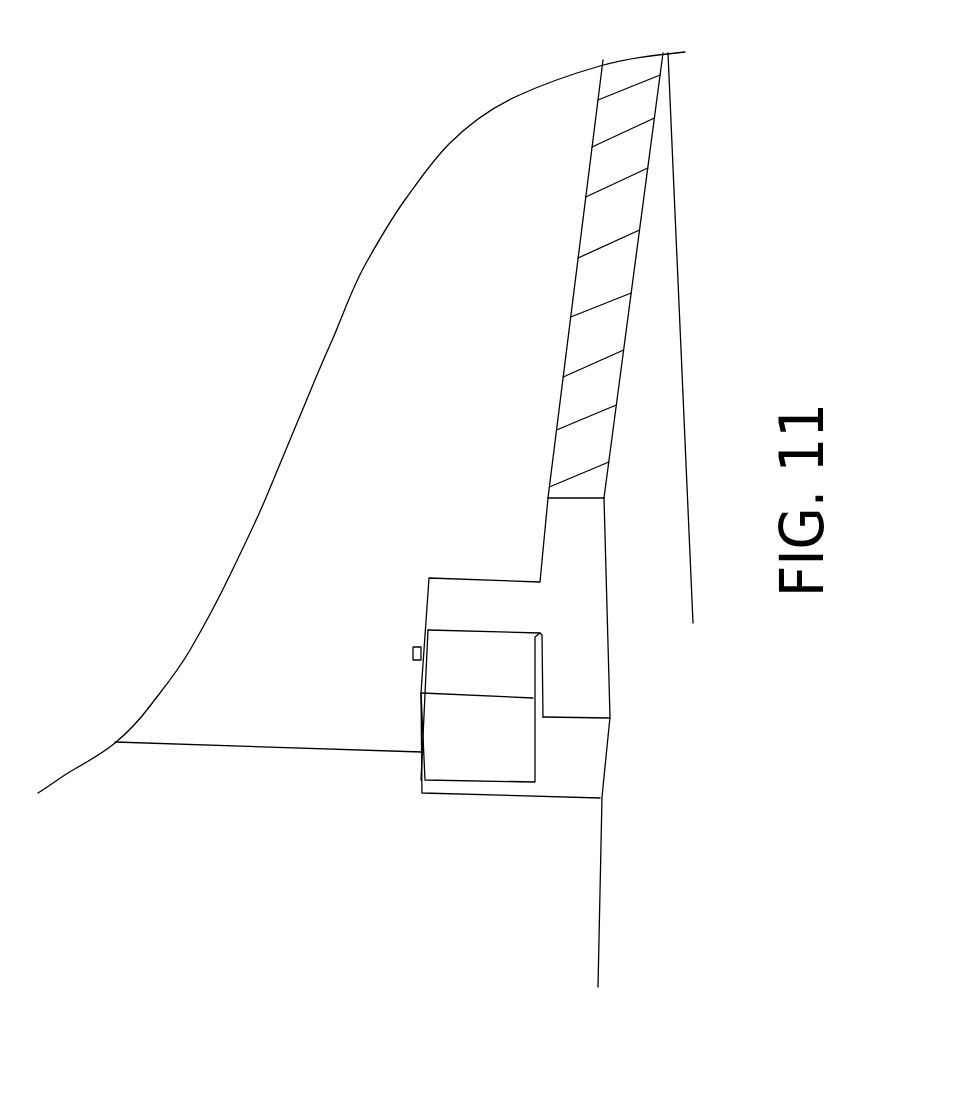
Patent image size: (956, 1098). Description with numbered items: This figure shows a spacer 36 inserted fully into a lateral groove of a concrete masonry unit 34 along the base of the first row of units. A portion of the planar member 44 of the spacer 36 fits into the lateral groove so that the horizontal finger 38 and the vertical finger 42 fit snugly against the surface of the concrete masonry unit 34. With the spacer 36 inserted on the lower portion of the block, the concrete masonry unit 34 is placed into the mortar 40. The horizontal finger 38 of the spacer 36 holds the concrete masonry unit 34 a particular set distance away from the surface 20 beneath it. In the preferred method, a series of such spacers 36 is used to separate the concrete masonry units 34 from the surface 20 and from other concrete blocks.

The surface 20 is at (404, 544).
The concrete masonry unit 34 is at (361, 422).
The spacer 36 is at (488, 732).
The horizontal finger 38 is at (569, 648).
The mortar 40 is at (546, 259).
The vertical finger 42 is at (401, 726).
The planar member 44 is at (475, 784).